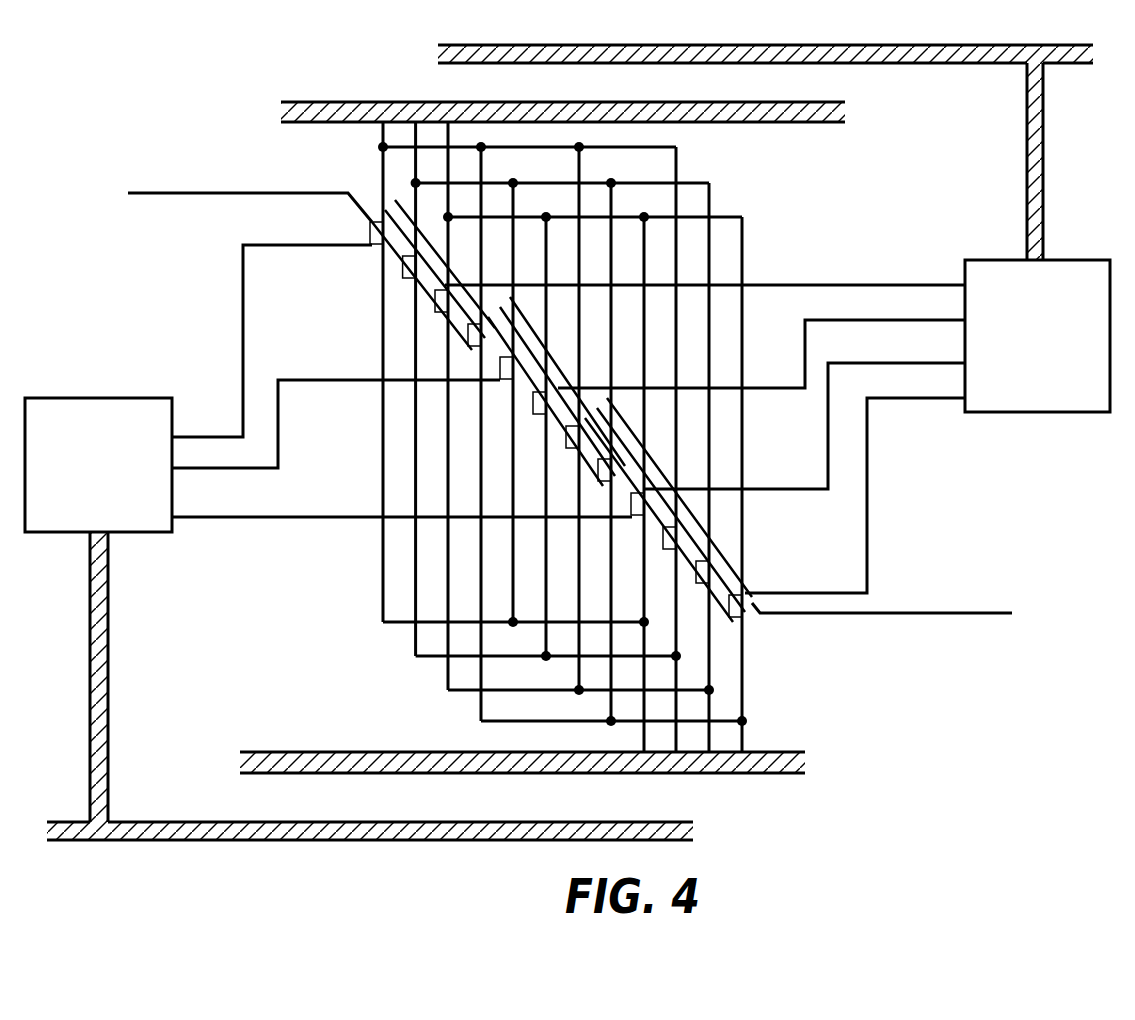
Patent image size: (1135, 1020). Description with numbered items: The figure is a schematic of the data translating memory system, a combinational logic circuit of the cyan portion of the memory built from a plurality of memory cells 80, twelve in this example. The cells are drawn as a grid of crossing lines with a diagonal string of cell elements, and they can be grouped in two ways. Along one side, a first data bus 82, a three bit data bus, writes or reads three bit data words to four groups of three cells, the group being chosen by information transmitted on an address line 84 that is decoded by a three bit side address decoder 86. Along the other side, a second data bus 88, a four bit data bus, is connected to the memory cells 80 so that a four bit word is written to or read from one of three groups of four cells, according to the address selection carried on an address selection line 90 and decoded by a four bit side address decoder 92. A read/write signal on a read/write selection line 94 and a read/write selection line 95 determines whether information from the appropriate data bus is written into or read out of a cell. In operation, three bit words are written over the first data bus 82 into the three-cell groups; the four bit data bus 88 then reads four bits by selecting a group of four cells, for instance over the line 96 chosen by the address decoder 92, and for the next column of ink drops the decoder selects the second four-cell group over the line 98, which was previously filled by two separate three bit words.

The memory cells 80 is at (750, 612).
The first data bus 82 is at (320, 102).
The address line 84 is at (892, 63).
The three bit side address decoder 86 is at (1013, 413).
The second data bus 88 is at (772, 752).
The address selection line 90 is at (477, 822).
The four bit side address decoder 92 is at (75, 398).
The read/write selection line 94 is at (165, 195).
The read/write selection line 95 is at (920, 613).
The line 96 is at (241, 305).
The line 98 is at (357, 380).